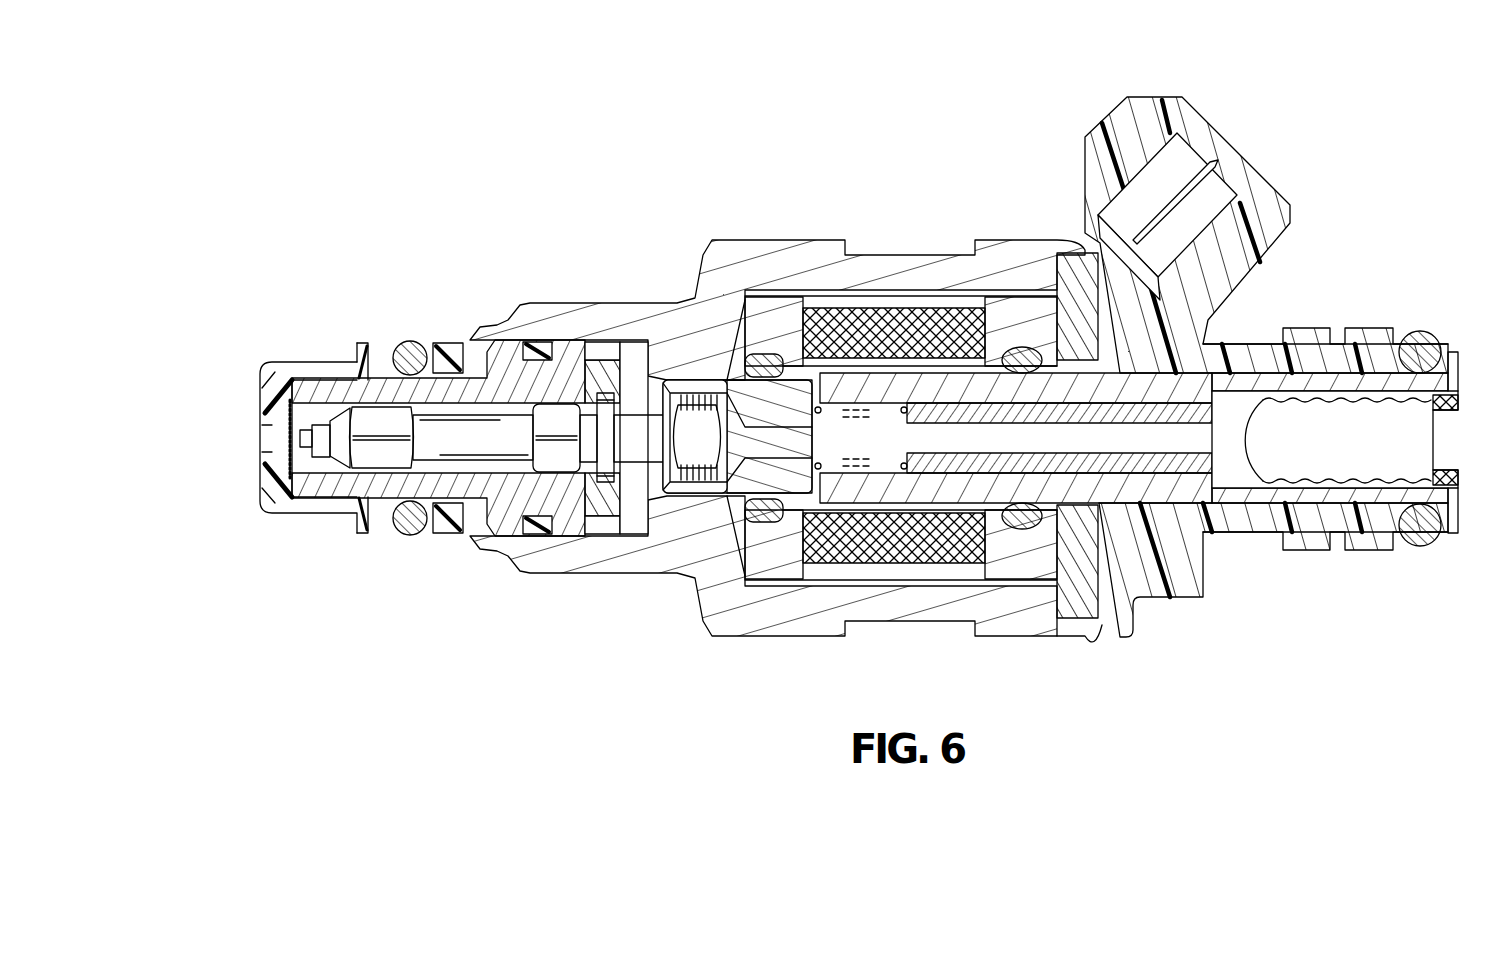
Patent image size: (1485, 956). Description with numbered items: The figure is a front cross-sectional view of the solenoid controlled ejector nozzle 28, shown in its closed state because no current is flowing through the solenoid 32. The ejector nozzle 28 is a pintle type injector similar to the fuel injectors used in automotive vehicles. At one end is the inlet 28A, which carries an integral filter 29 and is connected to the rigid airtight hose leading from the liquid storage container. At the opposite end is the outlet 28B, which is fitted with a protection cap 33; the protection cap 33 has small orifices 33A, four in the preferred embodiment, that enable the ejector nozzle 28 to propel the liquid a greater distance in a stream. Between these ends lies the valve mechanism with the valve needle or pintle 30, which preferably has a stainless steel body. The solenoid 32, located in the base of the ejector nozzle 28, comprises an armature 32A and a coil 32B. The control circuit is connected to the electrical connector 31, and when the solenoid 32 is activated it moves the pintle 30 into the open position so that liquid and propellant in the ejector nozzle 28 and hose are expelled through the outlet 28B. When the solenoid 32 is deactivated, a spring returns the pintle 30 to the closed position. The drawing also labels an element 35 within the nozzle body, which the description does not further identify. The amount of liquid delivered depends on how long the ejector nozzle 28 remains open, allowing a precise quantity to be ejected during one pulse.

The ejector nozzle 28 is at (792, 161).
The inlet 28A is at (1466, 478).
The outlet 28B is at (243, 488).
The filter 29 is at (1340, 395).
The pintle 30 is at (486, 460).
The electrical connector 31 is at (1207, 112).
The solenoid 32 is at (898, 280).
The armature 32A is at (957, 490).
The coil 32B is at (870, 565).
The protection cap 33 is at (341, 369).
The orifice 33A is at (270, 425).
The armature 35 is at (820, 403).